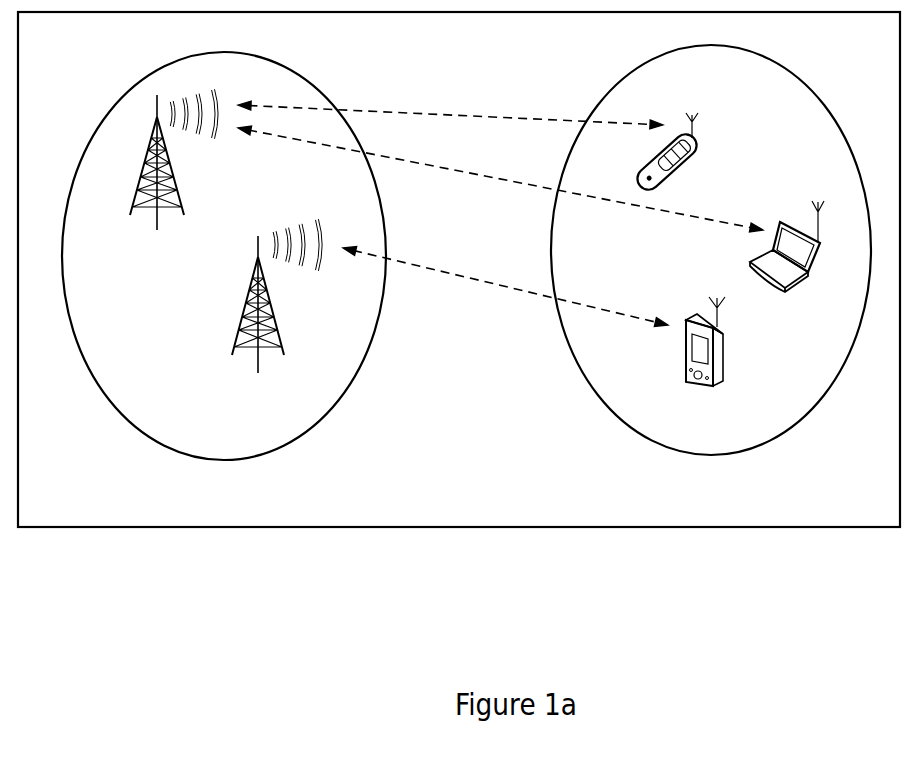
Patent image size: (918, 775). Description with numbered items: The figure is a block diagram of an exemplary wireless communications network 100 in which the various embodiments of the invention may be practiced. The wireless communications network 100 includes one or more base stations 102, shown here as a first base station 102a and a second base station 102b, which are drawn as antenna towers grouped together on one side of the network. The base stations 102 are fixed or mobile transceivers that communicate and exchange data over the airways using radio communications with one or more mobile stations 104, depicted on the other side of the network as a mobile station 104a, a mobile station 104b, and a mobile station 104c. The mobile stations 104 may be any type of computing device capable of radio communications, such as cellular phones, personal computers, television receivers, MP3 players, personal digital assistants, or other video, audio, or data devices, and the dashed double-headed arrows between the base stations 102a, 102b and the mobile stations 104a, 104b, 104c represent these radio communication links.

The wireless communications network 100 is at (468, 531).
The base stations 102 is at (210, 462).
The base station 102a is at (148, 218).
The base station 102b is at (245, 360).
The mobile stations 104 is at (725, 458).
The mobile station 104a is at (683, 180).
The mobile station 104b is at (797, 285).
The mobile station 104c is at (722, 367).